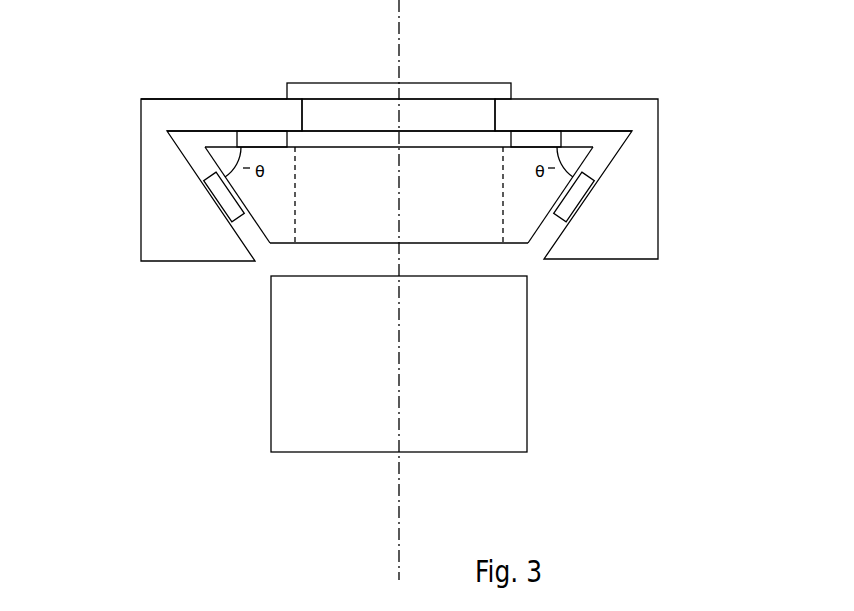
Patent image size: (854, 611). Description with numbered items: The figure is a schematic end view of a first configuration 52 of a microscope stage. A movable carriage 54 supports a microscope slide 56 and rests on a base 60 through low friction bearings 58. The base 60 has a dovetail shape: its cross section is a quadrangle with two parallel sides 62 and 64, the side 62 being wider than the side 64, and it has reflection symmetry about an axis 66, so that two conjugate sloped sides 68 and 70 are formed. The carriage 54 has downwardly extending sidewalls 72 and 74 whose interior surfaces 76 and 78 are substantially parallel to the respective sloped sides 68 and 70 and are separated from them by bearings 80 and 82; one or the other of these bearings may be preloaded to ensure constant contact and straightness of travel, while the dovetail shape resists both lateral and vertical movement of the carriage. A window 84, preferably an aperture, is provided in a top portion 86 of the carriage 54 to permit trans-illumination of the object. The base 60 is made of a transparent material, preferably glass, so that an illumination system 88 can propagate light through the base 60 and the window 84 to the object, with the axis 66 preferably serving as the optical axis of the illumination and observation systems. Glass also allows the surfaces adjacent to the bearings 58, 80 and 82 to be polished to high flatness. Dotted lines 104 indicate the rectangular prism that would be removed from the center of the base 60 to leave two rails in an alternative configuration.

The first configuration 52 is at (225, 394).
The movable carriage 54 is at (408, 144).
The microscope slide 56 is at (483, 88).
The low friction bearings 58 is at (258, 140).
The base 60 is at (396, 232).
The parallel side 62 is at (491, 146).
The parallel side 64 is at (502, 248).
The axis 66 is at (398, 505).
The sloped side 68 is at (585, 158).
The sloped side 70 is at (212, 163).
The sidewall 72 is at (647, 215).
The sidewall 74 is at (165, 236).
The interior surface 76 is at (607, 170).
The interior surface 78 is at (205, 176).
The bearing 80 is at (563, 205).
The bearing 82 is at (232, 205).
The window 84 is at (353, 117).
The top portion 86 is at (178, 108).
The illumination system 88 is at (492, 423).
The dotted lines 104 is at (503, 210).